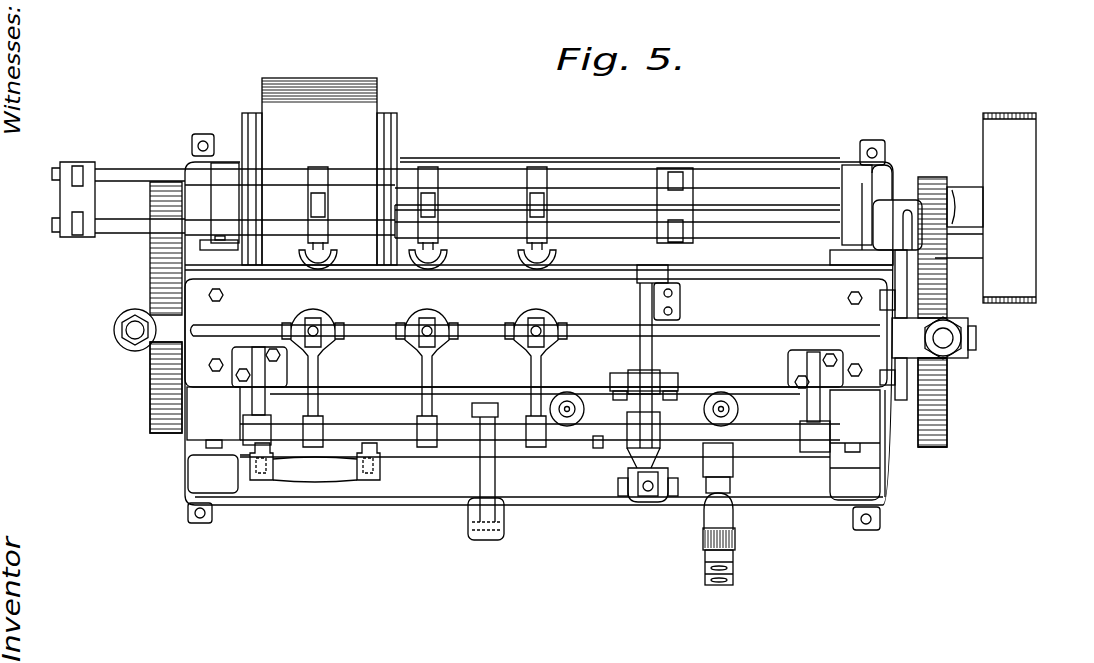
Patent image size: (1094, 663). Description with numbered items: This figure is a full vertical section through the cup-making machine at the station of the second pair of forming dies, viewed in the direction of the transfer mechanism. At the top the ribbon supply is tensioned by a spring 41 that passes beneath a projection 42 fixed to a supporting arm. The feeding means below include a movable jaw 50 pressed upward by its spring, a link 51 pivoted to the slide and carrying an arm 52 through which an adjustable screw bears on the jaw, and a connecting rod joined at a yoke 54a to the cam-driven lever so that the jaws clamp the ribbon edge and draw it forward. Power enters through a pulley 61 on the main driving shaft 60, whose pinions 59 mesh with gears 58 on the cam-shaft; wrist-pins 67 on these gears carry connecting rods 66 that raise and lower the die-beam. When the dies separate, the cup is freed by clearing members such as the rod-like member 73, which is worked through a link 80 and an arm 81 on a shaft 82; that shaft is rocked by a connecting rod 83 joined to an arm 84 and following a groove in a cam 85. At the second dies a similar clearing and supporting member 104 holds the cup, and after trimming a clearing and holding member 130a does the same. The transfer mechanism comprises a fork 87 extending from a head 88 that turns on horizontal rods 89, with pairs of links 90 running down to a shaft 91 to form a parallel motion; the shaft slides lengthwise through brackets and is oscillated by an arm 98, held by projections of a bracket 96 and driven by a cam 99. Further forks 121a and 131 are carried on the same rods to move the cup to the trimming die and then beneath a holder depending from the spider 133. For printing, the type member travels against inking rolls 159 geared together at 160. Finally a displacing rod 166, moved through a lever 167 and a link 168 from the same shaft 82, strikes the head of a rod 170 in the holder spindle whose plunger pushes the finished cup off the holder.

The spring 41 is at (405, 120).
The projection 42 is at (420, 158).
The movable jaw 50 is at (272, 505).
The link 51 is at (203, 417).
The arm 52 is at (118, 320).
The yoke 54a is at (370, 450).
The gear 58 is at (150, 418).
The pinion 59 is at (162, 198).
The main driving shaft 60 is at (963, 193).
The pulley 61 is at (1000, 130).
The connecting rod 66 is at (968, 357).
The wrist-pin 67 is at (978, 340).
The clearing member 73 is at (322, 340).
The link 80 is at (298, 324).
The arm 81 is at (322, 450).
The shaft 82 is at (787, 435).
The connecting rod 83 is at (480, 478).
The arm 84 is at (488, 492).
The cam 85 is at (478, 498).
The fork 87 is at (316, 272).
The head 88 is at (318, 178).
The horizontal rod 89 is at (52, 225).
The link 90 is at (78, 168).
The shaft 91 is at (947, 234).
The bracket 96 is at (895, 222).
The arm 98 is at (935, 258).
The cam 99 is at (947, 428).
The clearing and supporting member 104 is at (440, 338).
The fork 121a is at (430, 275).
The clearing and holding member 130a is at (537, 418).
The fork 131 is at (547, 273).
The spider 133 is at (597, 440).
The inking roll 159 is at (712, 515).
The gear 160 is at (735, 535).
The rod 166 is at (645, 495).
The lever 167 is at (650, 360).
The link 168 is at (612, 378).
The rod 170 is at (735, 440).